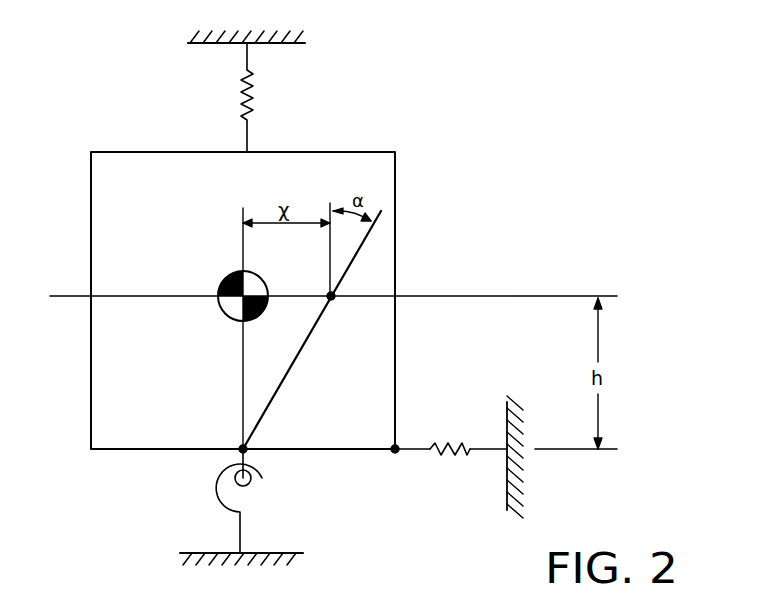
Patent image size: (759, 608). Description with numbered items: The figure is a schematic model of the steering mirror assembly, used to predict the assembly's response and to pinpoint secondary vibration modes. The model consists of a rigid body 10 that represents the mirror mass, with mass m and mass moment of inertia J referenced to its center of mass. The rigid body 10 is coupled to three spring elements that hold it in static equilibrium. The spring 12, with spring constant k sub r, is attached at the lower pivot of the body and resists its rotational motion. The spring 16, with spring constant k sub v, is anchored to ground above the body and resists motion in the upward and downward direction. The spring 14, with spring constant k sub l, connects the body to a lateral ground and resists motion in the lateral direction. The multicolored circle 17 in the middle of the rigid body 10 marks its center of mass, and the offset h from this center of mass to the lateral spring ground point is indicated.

The rigid body 10 is at (89, 451).
The spring 12 is at (243, 527).
The spring 14 is at (467, 445).
The spring 16 is at (241, 87).
The multicolored circle 17 is at (219, 304).